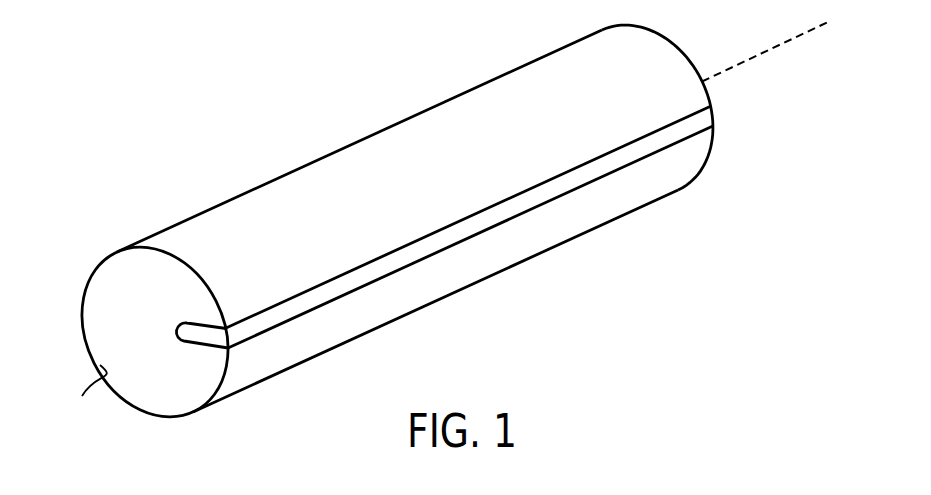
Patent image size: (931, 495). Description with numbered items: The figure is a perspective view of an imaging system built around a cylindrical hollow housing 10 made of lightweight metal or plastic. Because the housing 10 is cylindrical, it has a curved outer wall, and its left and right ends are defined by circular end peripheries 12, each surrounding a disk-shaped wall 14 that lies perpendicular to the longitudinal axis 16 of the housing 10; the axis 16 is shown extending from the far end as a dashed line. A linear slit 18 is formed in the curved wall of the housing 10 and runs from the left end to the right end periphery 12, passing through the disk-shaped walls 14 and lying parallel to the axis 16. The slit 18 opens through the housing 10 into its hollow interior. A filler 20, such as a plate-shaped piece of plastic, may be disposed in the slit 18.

The housing 10 is at (349, 161).
The circular end periphery 12 is at (110, 254).
The disk-shaped wall 14 is at (122, 357).
The longitudinal axis 16 is at (762, 52).
The linear slit 18 is at (387, 257).
The filler 20 is at (383, 279).